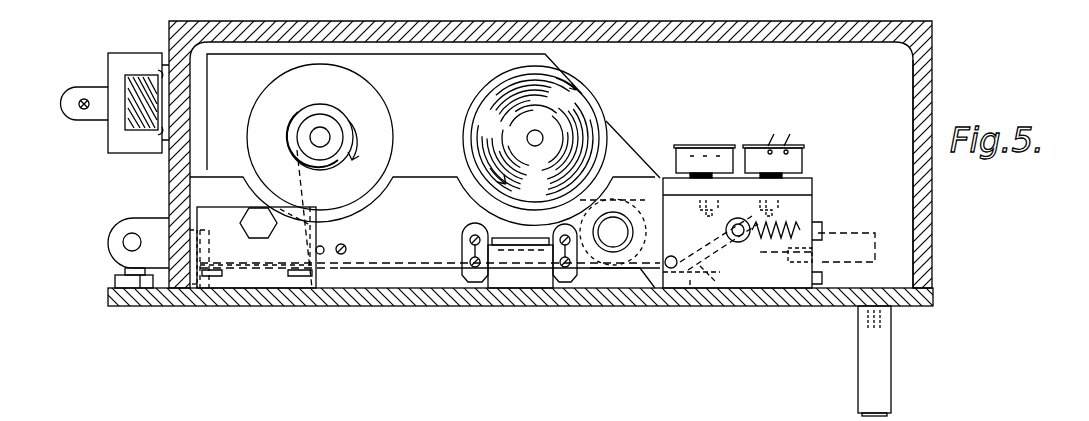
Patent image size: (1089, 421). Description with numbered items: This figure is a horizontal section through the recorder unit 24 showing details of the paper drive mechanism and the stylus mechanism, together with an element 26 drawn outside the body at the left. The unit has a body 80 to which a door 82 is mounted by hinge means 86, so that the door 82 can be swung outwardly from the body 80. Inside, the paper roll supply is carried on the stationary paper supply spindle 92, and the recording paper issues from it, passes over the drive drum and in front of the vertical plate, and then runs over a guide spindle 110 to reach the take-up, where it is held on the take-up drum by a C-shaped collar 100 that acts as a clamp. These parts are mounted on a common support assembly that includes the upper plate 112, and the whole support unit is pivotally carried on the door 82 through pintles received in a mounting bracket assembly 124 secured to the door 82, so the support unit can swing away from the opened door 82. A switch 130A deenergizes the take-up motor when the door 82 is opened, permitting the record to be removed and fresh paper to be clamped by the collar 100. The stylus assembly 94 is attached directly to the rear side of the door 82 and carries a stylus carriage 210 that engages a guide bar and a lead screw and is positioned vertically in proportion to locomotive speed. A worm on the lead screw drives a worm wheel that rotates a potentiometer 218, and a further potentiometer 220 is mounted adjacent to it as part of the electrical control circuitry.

The unit 24 is at (949, 93).
The body 80 is at (932, 118).
The latch member 26 is at (95, 110).
The hinge means 86 is at (124, 245).
The C-shaped collar 100 is at (287, 137).
The paper supply spindle 92 is at (543, 138).
The guide spindle 110 is at (328, 248).
The upper plate 112 is at (424, 255).
The mounting bracket assembly 124 is at (265, 255).
The switch 130A is at (194, 290).
The stylus assembly 94 is at (829, 193).
The stylus carriage 210 is at (722, 262).
The potentiometer 218 is at (795, 155).
The further potentiometer 220 is at (710, 150).
The door 82 is at (832, 307).